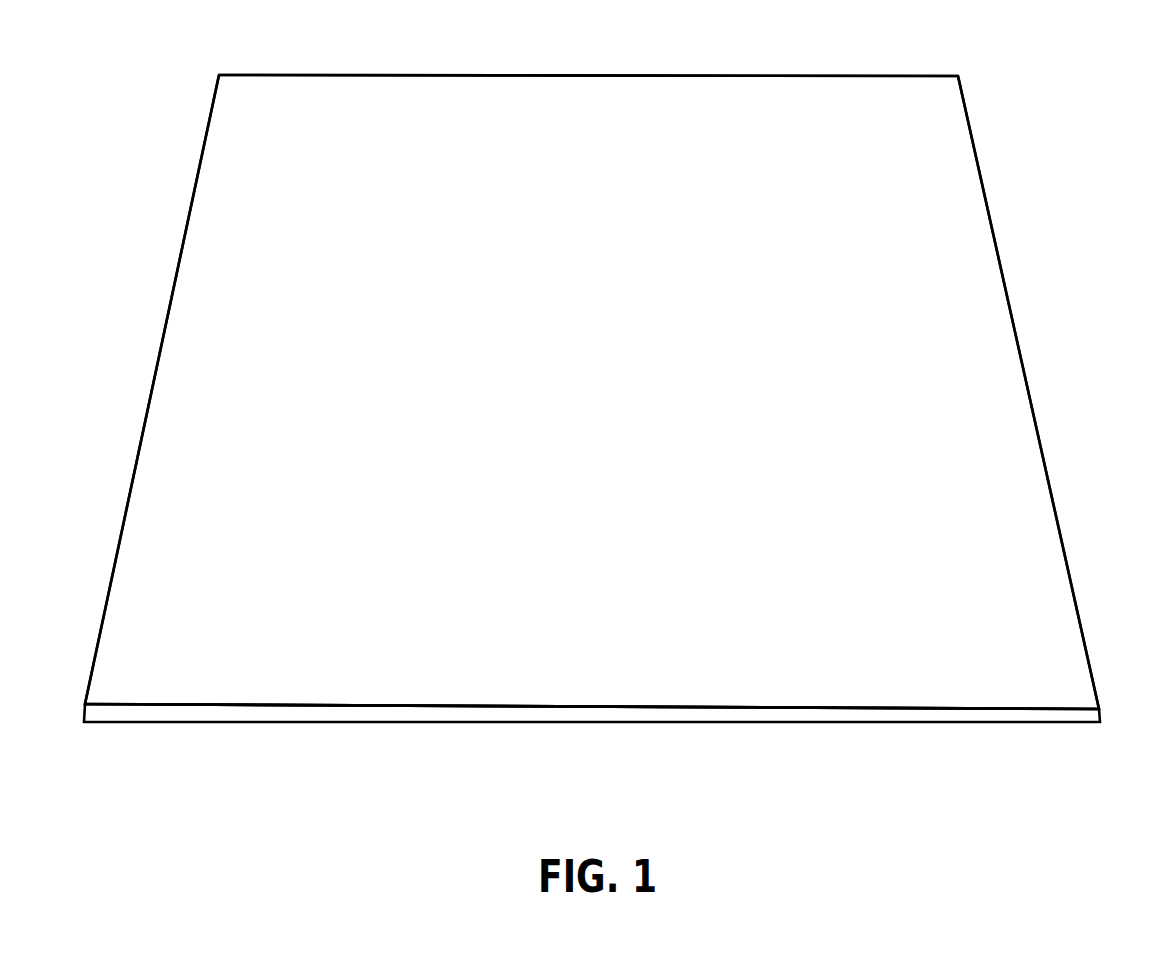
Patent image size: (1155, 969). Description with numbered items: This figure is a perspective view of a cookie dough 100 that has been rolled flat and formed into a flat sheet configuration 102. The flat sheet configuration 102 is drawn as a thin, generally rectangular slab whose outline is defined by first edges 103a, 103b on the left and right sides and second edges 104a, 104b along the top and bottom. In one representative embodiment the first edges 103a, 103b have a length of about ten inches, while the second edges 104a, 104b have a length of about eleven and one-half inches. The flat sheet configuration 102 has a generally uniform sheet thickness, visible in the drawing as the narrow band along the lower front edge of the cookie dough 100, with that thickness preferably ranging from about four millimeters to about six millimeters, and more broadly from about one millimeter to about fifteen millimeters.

The cookie dough 100 is at (747, 670).
The flat sheet configuration 102 is at (602, 441).
The first edge 103a is at (135, 473).
The first edge 103b is at (1039, 435).
The second edge 104a is at (613, 77).
The second edge 104b is at (501, 716).